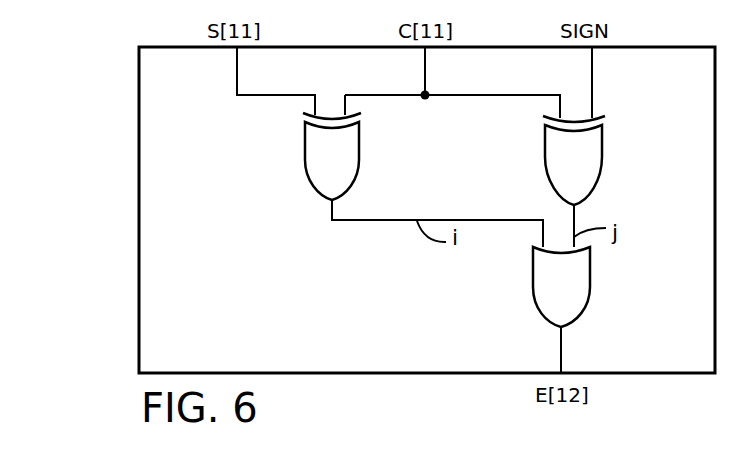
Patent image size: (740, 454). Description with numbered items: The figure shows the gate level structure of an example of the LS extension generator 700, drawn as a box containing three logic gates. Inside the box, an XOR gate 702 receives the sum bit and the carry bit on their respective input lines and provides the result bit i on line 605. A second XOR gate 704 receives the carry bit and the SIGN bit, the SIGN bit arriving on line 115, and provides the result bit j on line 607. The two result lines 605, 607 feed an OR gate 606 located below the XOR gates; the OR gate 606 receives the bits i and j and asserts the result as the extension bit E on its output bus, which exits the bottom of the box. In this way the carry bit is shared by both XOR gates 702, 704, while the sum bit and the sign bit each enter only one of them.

The LS extension generator 700 is at (138, 90).
The line 115 is at (592, 78).
The XOR gate 702 is at (359, 129).
The XOR gate 704 is at (602, 151).
The line 605 is at (452, 220).
The line 607 is at (574, 217).
The OR gate 606 is at (581, 287).